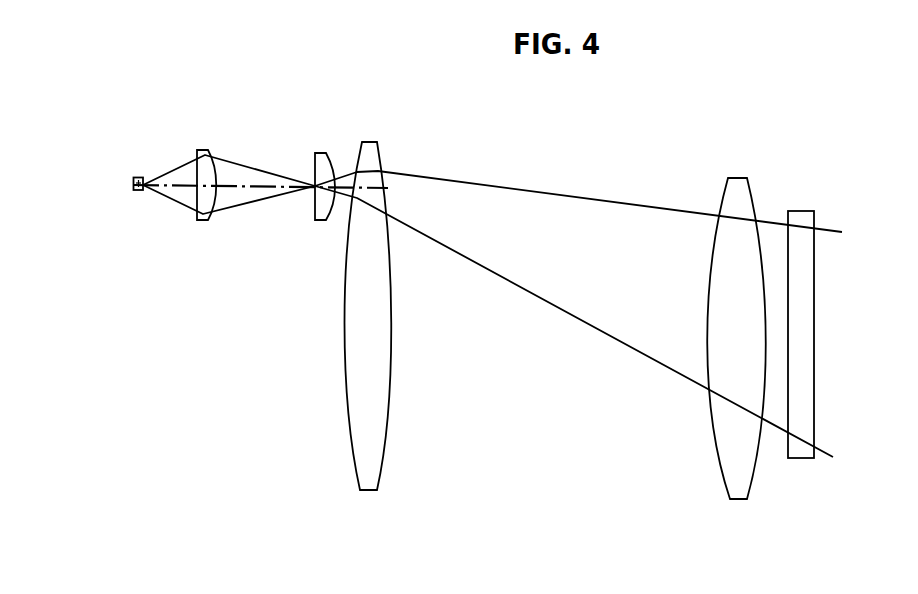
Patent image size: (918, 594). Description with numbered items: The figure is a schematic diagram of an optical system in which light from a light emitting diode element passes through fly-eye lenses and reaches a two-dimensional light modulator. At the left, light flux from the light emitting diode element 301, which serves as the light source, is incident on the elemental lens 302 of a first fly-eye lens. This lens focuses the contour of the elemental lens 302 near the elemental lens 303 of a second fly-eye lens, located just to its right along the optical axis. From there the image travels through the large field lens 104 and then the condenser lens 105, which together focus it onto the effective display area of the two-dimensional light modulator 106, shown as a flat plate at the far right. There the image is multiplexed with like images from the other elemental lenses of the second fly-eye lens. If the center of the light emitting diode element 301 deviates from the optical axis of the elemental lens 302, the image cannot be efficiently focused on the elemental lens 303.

The light emitting diode element 301 is at (140, 192).
The elemental lens of first fly-eye lens 302 is at (204, 152).
The elemental lens of second fly-eye lens 303 is at (327, 160).
The field lens 104 is at (363, 488).
The condenser lens 105 is at (736, 188).
The two-dimensional light modulator 106 is at (808, 210).